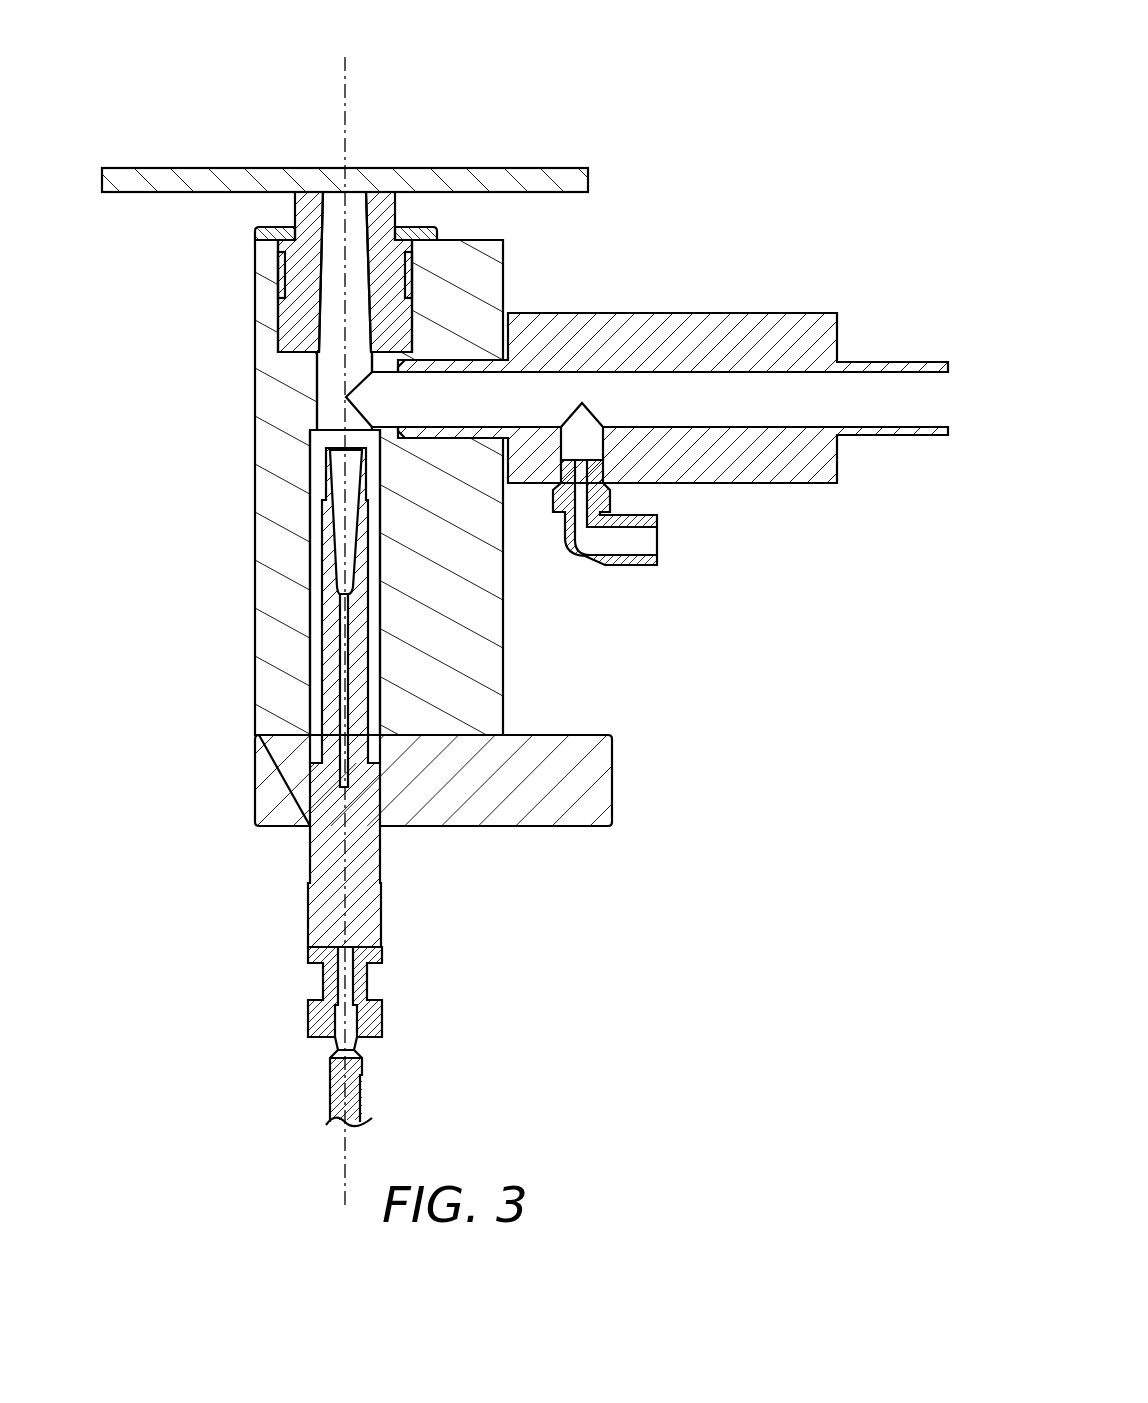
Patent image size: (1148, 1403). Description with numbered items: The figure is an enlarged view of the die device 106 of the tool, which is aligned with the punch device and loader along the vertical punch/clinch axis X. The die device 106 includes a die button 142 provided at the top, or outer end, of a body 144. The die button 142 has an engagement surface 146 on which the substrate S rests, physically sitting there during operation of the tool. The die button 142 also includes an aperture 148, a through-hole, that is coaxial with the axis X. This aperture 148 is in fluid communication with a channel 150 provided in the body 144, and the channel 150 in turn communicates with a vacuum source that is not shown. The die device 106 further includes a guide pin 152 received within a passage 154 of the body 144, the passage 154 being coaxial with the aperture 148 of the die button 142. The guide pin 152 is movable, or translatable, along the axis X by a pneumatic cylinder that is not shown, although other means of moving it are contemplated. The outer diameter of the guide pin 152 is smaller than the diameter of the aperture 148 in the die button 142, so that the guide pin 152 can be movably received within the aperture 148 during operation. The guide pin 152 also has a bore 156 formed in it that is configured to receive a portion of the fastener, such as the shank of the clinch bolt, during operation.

The die device 106 is at (498, 605).
The die button 142 is at (302, 262).
The body 144 is at (495, 632).
The engagement surface 146 is at (383, 190).
The aperture 148 is at (316, 326).
The channel 150 is at (766, 428).
The guide pin 152 is at (333, 644).
The passage 154 is at (318, 392).
The bore 156 is at (326, 523).
The substrate S is at (102, 180).
The punch/clinch axis X is at (345, 72).